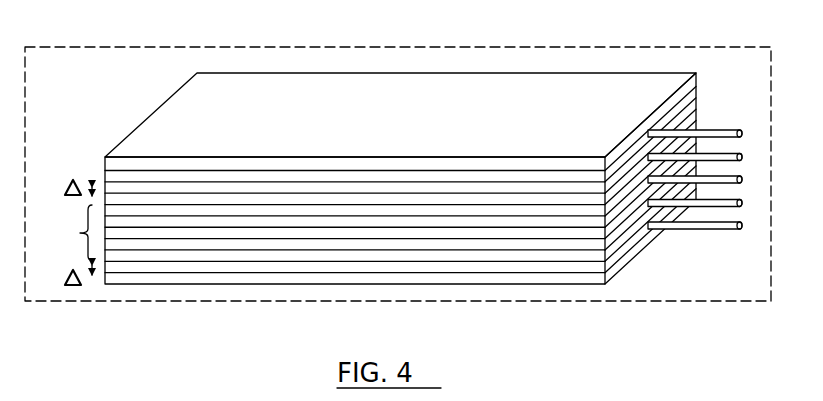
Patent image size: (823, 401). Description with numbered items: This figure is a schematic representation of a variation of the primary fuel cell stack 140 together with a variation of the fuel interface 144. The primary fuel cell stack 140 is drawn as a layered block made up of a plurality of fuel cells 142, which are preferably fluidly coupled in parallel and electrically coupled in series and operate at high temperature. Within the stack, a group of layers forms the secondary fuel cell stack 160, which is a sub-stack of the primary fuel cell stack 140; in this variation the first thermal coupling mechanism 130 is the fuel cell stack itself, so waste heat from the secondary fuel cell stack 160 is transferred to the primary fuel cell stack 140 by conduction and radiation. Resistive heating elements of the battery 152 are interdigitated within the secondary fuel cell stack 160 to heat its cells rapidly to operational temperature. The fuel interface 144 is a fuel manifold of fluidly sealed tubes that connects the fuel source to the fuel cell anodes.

The first thermal coupling mechanism 130 is at (411, 145).
The primary fuel cell stack 140 is at (398, 161).
The fuel cells 142 is at (505, 93).
The fuel interface 144 is at (721, 129).
The resistive heating elements of the battery 152 is at (622, 181).
The secondary fuel cell stack 160 is at (80, 234).